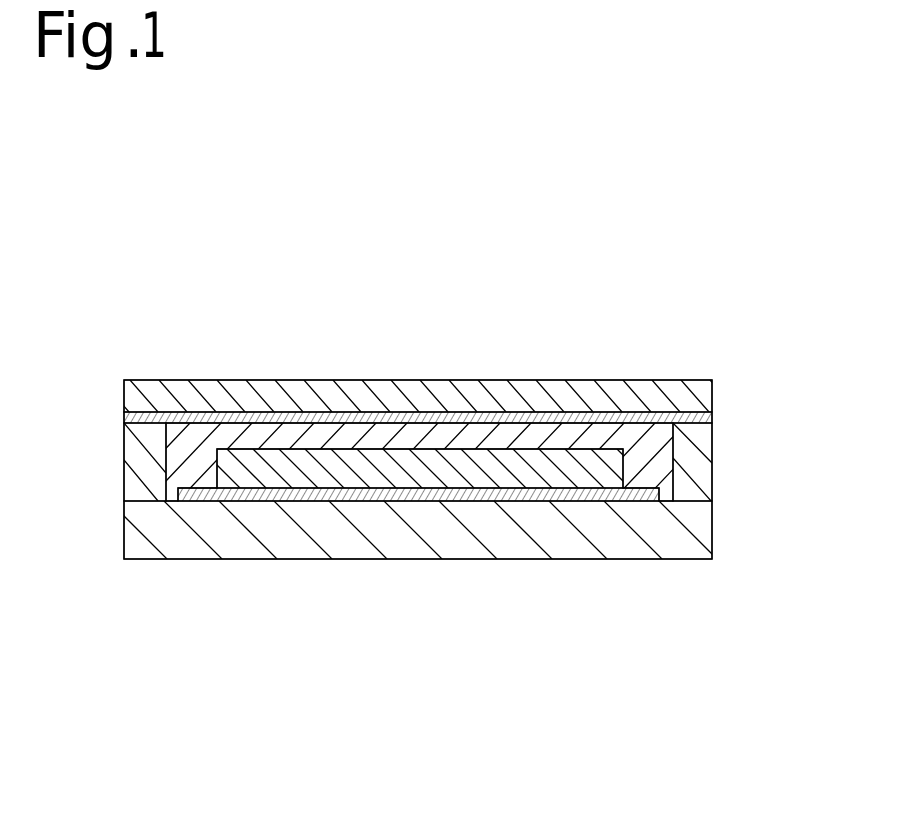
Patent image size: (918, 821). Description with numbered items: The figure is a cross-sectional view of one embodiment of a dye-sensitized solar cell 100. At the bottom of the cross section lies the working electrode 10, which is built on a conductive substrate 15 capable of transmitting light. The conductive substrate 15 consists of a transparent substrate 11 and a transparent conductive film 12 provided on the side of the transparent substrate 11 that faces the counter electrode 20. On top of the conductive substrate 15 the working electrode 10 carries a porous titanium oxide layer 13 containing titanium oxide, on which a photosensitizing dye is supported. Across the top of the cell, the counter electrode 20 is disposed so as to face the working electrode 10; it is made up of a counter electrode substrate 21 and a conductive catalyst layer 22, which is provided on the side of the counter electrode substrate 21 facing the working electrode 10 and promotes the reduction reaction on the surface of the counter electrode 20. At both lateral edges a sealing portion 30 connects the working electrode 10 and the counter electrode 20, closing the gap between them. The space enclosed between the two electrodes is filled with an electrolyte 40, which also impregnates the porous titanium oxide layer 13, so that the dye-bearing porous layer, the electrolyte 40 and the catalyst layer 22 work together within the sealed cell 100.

The dye-sensitized solar cell 100 is at (416, 439).
The working electrode 10 is at (413, 608).
The transparent substrate 11 is at (303, 548).
The transparent conductive film 12 is at (405, 495).
The porous titanium oxide layer 13 is at (470, 468).
The conductive substrate 15 is at (413, 605).
The counter electrode 20 is at (419, 336).
The counter electrode substrate 21 is at (489, 398).
The conductive catalyst layer 22 is at (523, 288).
The sealing portion 30 is at (130, 470).
The electrolyte 40 is at (332, 432).